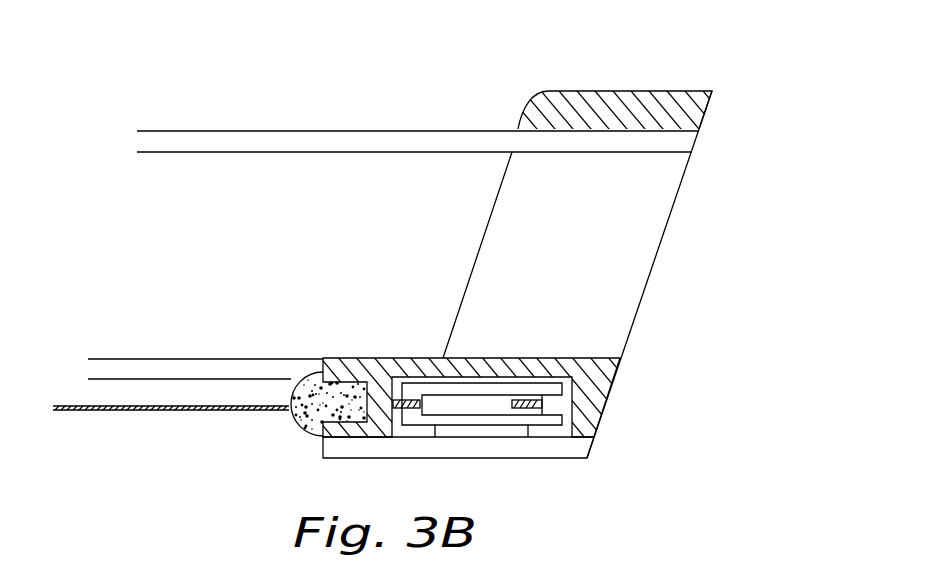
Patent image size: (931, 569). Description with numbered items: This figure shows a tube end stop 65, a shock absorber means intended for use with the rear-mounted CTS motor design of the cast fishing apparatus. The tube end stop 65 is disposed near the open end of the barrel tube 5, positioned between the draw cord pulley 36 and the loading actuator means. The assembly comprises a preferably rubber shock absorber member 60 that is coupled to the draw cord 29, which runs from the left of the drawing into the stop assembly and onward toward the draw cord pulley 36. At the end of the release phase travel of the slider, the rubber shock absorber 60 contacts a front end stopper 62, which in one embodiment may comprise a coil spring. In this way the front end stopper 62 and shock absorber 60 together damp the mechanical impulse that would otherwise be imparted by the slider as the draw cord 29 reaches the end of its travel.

The barrel tube 5 is at (330, 131).
The tube end stop 65 is at (733, 128).
The front end stopper 62 is at (357, 358).
The rubber shock absorber member 60 is at (298, 428).
The draw cord 29 is at (95, 411).
The draw cord pulley 36 is at (542, 415).